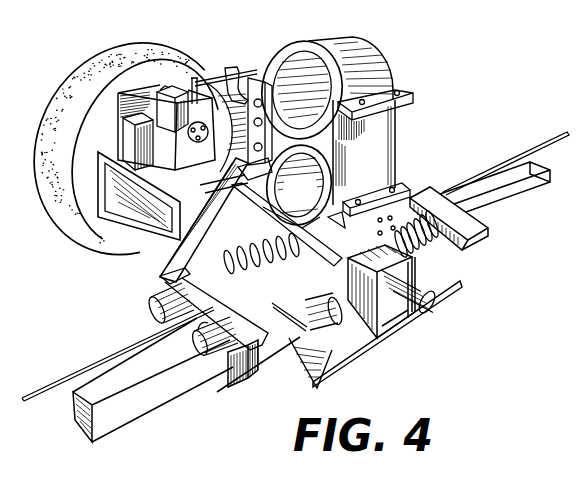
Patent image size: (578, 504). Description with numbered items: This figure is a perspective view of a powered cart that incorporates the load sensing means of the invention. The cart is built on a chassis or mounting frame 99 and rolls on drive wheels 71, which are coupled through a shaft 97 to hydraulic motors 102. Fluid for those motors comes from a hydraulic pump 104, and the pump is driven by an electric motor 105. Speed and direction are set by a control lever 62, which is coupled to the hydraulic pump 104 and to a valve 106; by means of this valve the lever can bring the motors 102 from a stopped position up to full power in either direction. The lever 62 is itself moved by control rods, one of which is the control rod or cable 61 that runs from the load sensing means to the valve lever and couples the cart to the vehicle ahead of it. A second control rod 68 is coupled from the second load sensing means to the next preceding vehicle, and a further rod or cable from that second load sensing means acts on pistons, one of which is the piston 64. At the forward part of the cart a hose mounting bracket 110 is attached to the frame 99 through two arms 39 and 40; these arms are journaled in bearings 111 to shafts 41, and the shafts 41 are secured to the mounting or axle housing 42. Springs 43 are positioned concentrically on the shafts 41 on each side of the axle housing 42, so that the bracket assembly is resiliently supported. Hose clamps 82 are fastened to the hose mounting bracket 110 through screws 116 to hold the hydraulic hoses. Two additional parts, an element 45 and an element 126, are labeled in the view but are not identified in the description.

The arm 39 is at (474, 224).
The arm 40 is at (167, 280).
The shaft 41 is at (147, 303).
The mounting (axle housing) 42 is at (372, 332).
The spring 43 is at (258, 246).
The rod 45 is at (528, 152).
The control rod (control cable) 61 is at (271, 55).
The control lever 62 is at (204, 76).
The piston 64 is at (327, 318).
The control rod 68 is at (110, 350).
The drive wheel 71 is at (137, 42).
The hose clamp 82 is at (392, 130).
The shaft 97 is at (433, 304).
The chassis (mounting frame) 99 is at (445, 278).
The hydraulic motor 102 is at (147, 262).
The hydraulic pump 104 is at (170, 163).
The electric motor 105 is at (240, 68).
The valve 106 is at (170, 88).
The hose mounting bracket 110 is at (312, 213).
The bearing 111 is at (255, 368).
The screw 116 is at (397, 187).
The block 126 is at (228, 388).